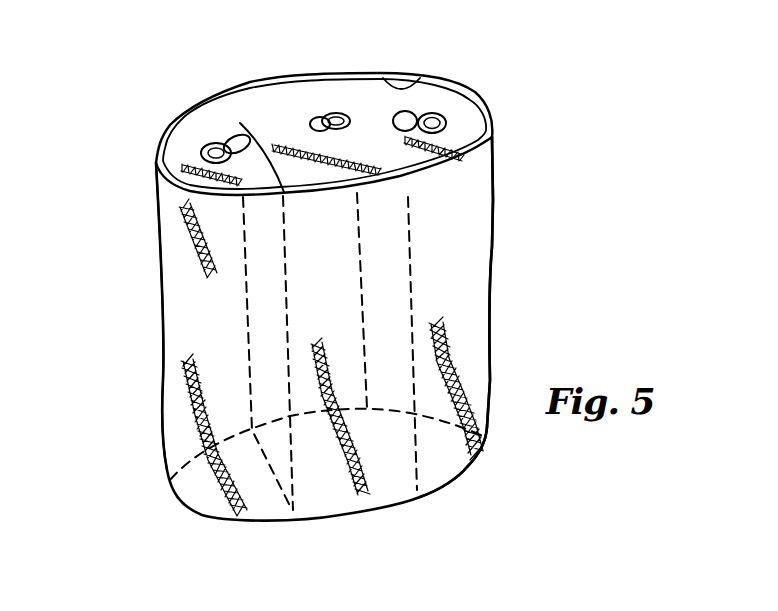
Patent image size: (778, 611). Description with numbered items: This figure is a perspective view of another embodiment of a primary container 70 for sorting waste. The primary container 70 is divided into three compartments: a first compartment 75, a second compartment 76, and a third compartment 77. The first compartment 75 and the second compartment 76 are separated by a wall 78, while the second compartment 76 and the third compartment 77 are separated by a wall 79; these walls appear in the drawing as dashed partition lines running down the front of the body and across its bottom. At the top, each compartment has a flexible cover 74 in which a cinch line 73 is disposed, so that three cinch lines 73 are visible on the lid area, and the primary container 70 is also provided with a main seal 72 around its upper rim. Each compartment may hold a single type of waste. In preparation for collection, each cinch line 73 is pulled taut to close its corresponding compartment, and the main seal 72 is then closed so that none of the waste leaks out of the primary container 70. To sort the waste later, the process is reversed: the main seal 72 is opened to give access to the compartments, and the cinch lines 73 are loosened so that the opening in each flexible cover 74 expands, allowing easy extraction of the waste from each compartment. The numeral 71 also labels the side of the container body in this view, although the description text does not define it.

The primary container 70 is at (140, 503).
The container body side wall 71 is at (490, 297).
The main seal 72 is at (443, 137).
The cinch line 73 is at (228, 140).
The flexible cover 74 is at (208, 146).
The first compartment 75 is at (222, 326).
The second compartment 76 is at (340, 321).
The third compartment 77 is at (463, 306).
The wall 78 is at (294, 470).
The wall 79 is at (413, 438).